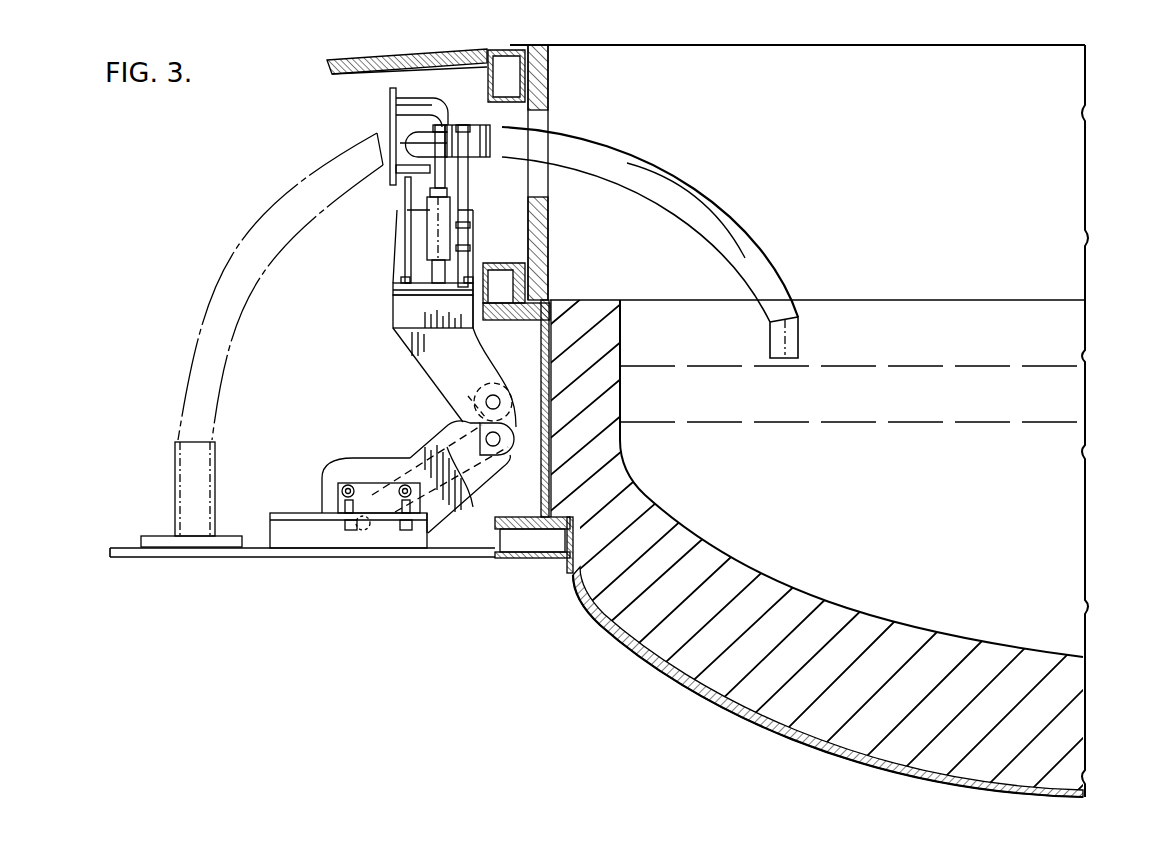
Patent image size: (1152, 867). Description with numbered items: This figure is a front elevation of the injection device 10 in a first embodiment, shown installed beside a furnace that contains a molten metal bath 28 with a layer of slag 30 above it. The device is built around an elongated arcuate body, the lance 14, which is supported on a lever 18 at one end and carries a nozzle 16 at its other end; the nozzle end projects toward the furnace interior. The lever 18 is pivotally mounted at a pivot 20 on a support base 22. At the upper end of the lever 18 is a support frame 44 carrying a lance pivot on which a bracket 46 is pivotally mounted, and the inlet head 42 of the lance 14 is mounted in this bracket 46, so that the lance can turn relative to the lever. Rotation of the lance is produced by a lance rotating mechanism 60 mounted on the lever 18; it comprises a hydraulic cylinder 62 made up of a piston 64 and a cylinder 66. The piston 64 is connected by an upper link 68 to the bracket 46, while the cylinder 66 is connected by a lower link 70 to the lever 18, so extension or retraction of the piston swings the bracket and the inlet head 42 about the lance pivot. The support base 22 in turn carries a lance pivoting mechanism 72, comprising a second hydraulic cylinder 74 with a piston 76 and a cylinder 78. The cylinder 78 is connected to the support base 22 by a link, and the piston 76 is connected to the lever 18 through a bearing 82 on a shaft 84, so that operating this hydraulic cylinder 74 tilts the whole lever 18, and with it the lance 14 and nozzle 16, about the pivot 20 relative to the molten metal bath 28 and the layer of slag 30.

The injection device 10 is at (248, 568).
The lance 14 is at (640, 160).
The nozzle 16 is at (800, 349).
The lever 18 is at (403, 343).
The pivot 20 is at (498, 446).
The support base 22 is at (438, 546).
The molten metal bath 28 is at (1085, 481).
The layer of slag 30 is at (1085, 402).
The inlet head 42 is at (390, 130).
The support frame 44 is at (382, 280).
The bracket 46 is at (462, 126).
The lance rotating mechanism 60 is at (458, 248).
The hydraulic cylinder 62 is at (470, 227).
The piston 64 is at (468, 191).
The cylinder 66 is at (427, 233).
The upper link 68 is at (410, 190).
The lower link 70 is at (430, 284).
The lance pivoting mechanism 72 is at (384, 464).
The hydraulic cylinder 74 is at (404, 456).
The piston 76 is at (456, 492).
The cylinder 78 is at (358, 484).
The bearing 82 is at (478, 406).
The shaft 84 is at (498, 385).